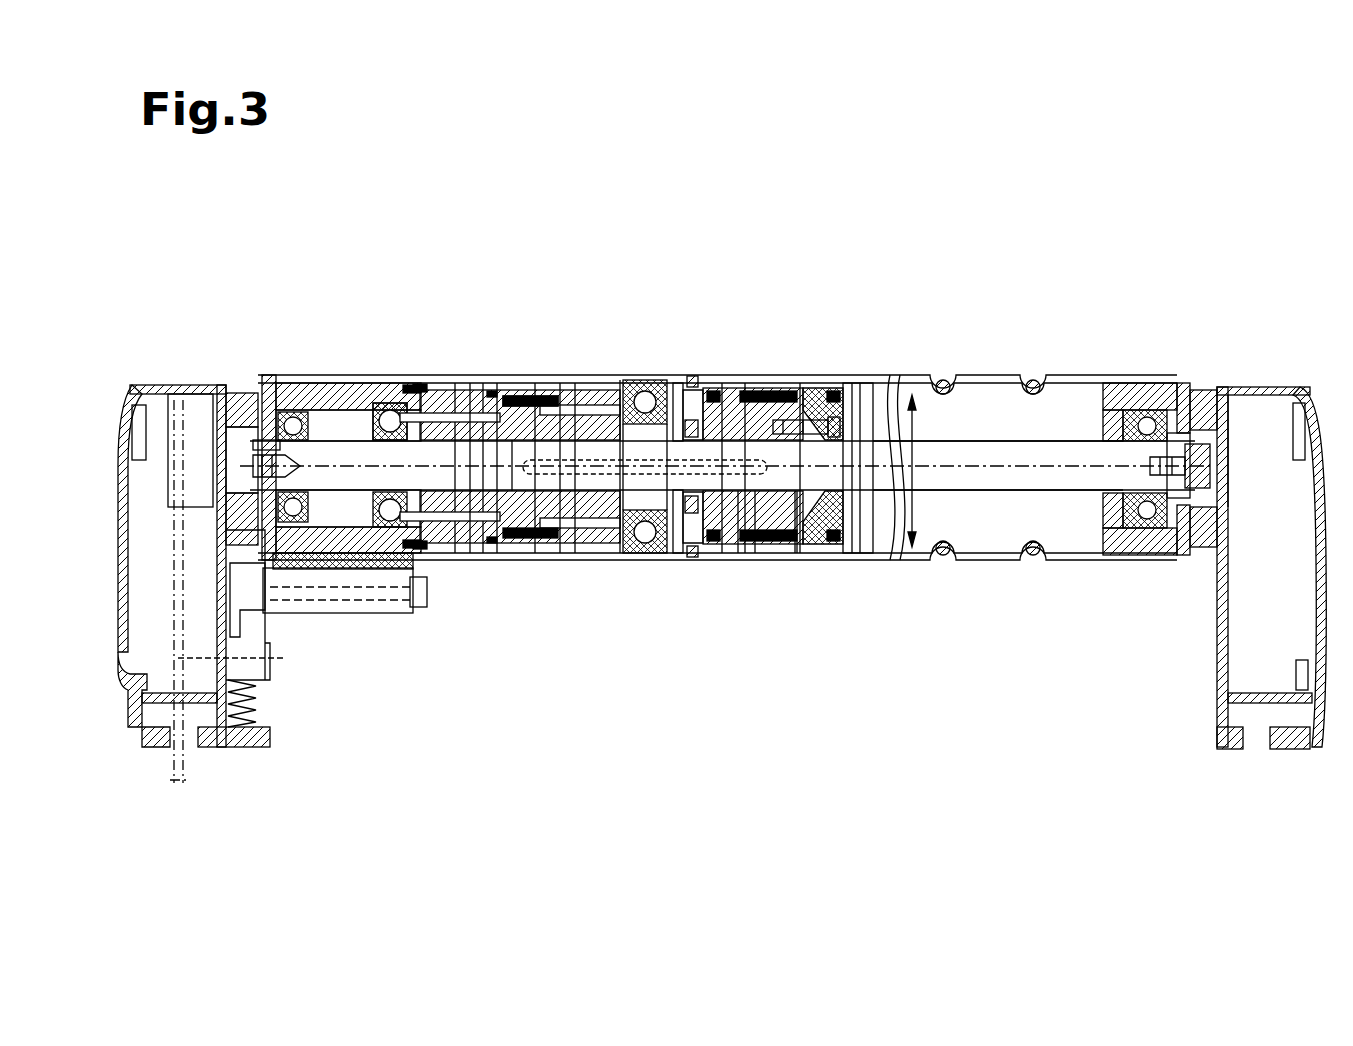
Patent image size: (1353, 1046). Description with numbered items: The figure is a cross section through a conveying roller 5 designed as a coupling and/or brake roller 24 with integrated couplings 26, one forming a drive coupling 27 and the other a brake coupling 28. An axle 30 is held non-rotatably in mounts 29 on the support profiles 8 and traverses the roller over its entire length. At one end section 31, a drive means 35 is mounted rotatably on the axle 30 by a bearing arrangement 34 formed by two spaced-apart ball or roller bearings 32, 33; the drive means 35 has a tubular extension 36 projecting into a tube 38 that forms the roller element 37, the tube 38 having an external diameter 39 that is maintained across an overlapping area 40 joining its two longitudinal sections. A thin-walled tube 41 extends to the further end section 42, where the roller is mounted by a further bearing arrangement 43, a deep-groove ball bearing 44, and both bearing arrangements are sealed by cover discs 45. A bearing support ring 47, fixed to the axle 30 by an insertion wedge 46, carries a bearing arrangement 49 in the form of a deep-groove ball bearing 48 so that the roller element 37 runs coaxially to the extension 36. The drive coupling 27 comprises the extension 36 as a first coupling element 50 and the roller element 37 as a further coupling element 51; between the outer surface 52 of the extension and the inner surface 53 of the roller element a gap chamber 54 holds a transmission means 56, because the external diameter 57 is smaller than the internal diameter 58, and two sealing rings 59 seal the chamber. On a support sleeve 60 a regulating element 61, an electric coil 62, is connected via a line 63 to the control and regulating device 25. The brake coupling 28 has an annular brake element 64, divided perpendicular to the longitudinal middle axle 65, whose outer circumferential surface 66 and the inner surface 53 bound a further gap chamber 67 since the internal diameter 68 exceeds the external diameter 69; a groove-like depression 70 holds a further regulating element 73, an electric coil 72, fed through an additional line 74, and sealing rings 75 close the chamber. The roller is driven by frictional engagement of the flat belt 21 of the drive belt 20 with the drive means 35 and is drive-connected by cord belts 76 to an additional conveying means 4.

The conveying means 4 is at (812, 305).
The conveying roller 5 is at (787, 290).
The support profile 8 is at (195, 393).
The drive belt 20 is at (347, 566).
The flat belt 21 is at (357, 578).
The coupling and/or brake roller 24 is at (880, 179).
The control and regulating device 25 is at (168, 378).
The couplings 26 is at (467, 565).
The drive coupling 27 is at (512, 565).
The brake coupling 28 is at (738, 563).
The mounts 29 is at (230, 378).
The axle 30 is at (1085, 376).
The end section 31 is at (334, 234).
The ball or roller bearing 32 is at (310, 610).
The ball or roller bearing 33 is at (372, 565).
The bearing arrangement 34 is at (289, 378).
The drive means 35 is at (337, 378).
The tubular extension 36 is at (445, 376).
The roller element 37 is at (530, 376).
The tube 38 is at (1000, 562).
The external diameter 39 is at (598, 376).
The overlapping area 40 is at (688, 362).
The tube 41 is at (906, 376).
The end section 42 is at (1149, 256).
The bearing arrangement 43 is at (1113, 562).
The deep-groove ball bearing 44 is at (1143, 562).
The cover discs 45 is at (268, 378).
The insertion wedge 46 is at (654, 376).
The bearing support ring 47 is at (590, 562).
The deep-groove ball bearing 48 is at (650, 562).
The bearing arrangement 49 is at (655, 562).
The first coupling element 50 is at (455, 562).
The further coupling element 51 is at (535, 565).
The outer surface 52 is at (412, 376).
The inner surface 53 is at (412, 376).
The gap chamber 54 is at (476, 376).
The transmission means 56 is at (470, 565).
The external diameter 57 is at (468, 376).
The internal diameter 58 is at (512, 376).
The sealing rings 59 is at (497, 565).
The support sleeve 60 is at (530, 376).
The regulating element 61 is at (575, 565).
The electric coil 62 is at (560, 565).
The line 63 is at (372, 376).
The brake element 64 is at (752, 376).
The longitudinal middle axle 65 is at (985, 565).
The outer circumferential surface 66 is at (765, 376).
The gap chamber 67 is at (800, 376).
The internal diameter 68 is at (923, 562).
The external diameter 69 is at (724, 376).
The groove-like depression 70 is at (755, 562).
The electric coil 72 is at (795, 565).
The regulating element 73 is at (795, 565).
The line 74 is at (848, 370).
The sealing rings 75 is at (710, 562).
The cord belts 76 is at (1033, 376).